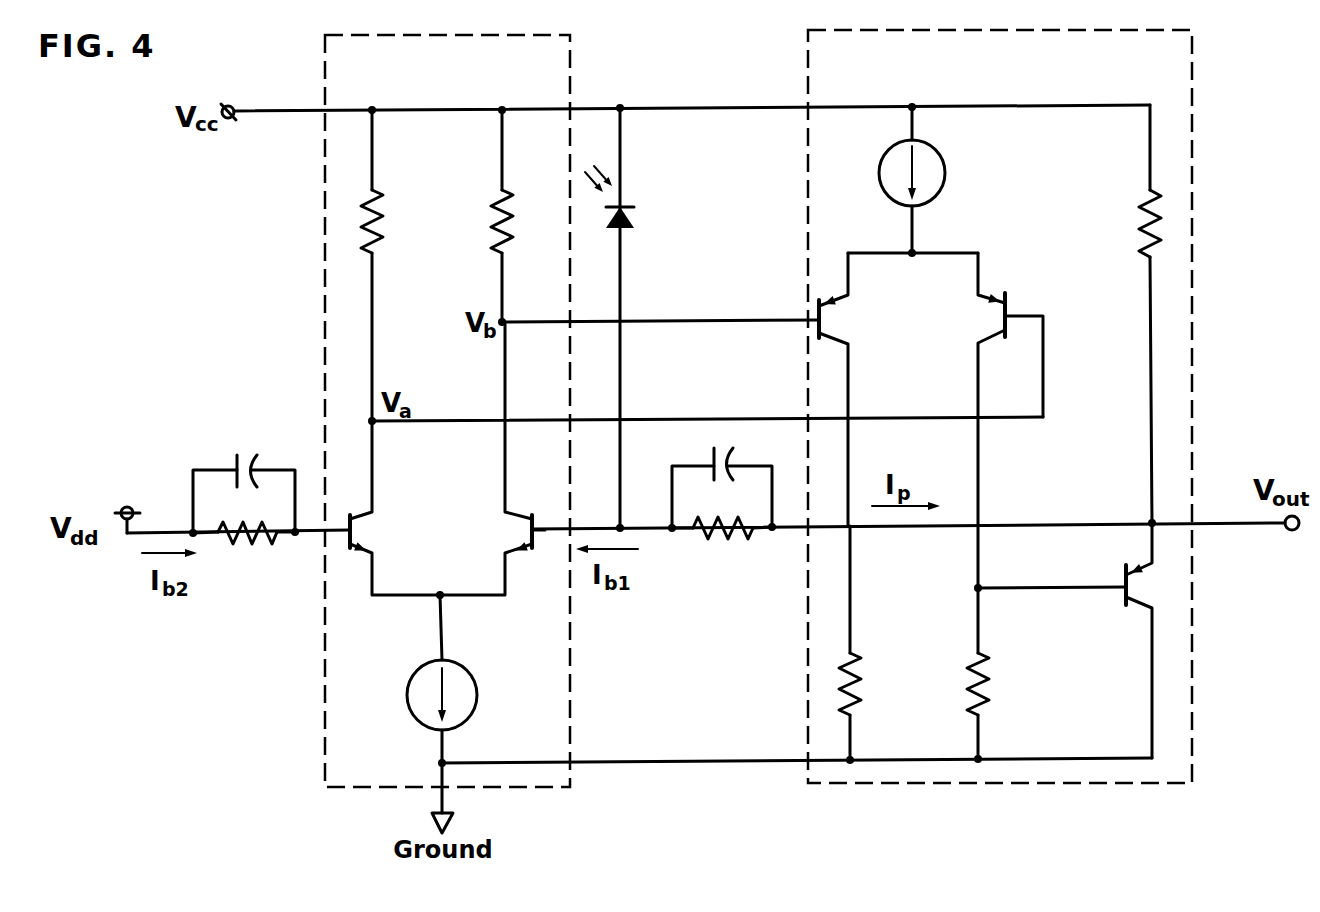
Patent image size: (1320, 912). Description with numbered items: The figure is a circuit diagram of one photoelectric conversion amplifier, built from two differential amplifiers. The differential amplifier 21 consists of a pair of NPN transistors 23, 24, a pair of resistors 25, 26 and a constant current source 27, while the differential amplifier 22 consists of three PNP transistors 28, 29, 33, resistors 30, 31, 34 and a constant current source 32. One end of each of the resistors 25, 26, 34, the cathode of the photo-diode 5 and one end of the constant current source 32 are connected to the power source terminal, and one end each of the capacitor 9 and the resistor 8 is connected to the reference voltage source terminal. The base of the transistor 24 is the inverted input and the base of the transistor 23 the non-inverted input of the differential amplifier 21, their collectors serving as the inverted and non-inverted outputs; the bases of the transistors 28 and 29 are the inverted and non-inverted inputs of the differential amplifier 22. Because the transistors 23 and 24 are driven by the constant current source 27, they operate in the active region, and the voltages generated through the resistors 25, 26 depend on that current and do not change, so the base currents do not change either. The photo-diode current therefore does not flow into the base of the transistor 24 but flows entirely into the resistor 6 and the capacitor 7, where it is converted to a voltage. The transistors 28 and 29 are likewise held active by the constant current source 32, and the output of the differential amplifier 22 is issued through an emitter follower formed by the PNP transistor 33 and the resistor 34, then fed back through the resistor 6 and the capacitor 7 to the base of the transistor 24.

The photo-diode 5 is at (630, 206).
The resistor 6 is at (714, 536).
The capacitor 7 is at (714, 447).
The resistor 8 is at (250, 540).
The capacitor 9 is at (237, 452).
The differential amplifier 21 is at (322, 68).
The differential amplifier 22 is at (803, 75).
The NPN transistor 23 is at (366, 528).
The NPN transistor 24 is at (514, 532).
The resistor 25 is at (376, 197).
The resistor 26 is at (500, 241).
The constant current source 27 is at (410, 712).
The PNP transistor 28 is at (830, 321).
The PNP transistor 29 is at (993, 337).
The resistor 30 is at (856, 656).
The resistor 31 is at (975, 690).
The constant current source 32 is at (946, 170).
The PNP transistor 33 is at (1136, 607).
The resistor 34 is at (1140, 229).